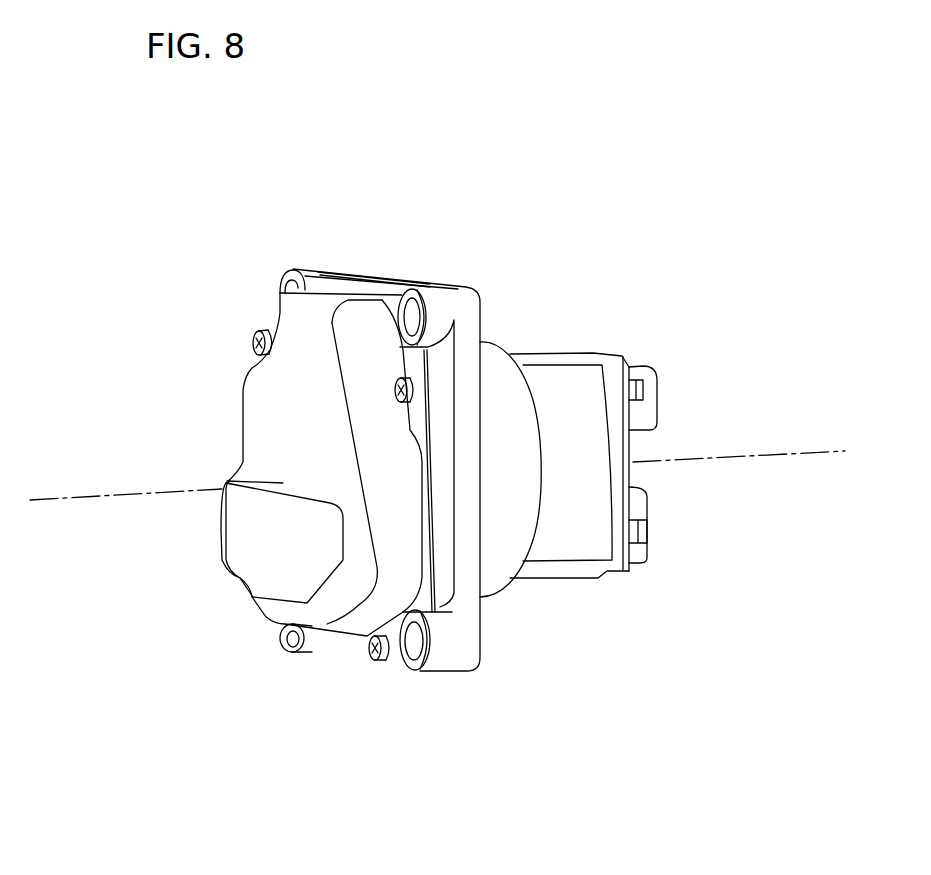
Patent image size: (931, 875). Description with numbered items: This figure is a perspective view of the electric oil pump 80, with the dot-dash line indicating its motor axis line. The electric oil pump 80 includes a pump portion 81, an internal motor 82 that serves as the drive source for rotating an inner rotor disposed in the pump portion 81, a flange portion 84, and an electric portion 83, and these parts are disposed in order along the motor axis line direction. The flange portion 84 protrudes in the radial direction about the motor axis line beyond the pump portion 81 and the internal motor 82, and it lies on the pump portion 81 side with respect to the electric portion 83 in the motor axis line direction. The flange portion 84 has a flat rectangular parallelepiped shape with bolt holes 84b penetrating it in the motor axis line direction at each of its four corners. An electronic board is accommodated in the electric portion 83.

The electric oil pump 80 is at (645, 229).
The pump portion 81 is at (538, 352).
The internal motor 82 is at (486, 593).
The electric portion 83 is at (243, 412).
The flange portion 84 is at (490, 292).
The bolt holes 84b is at (285, 272).